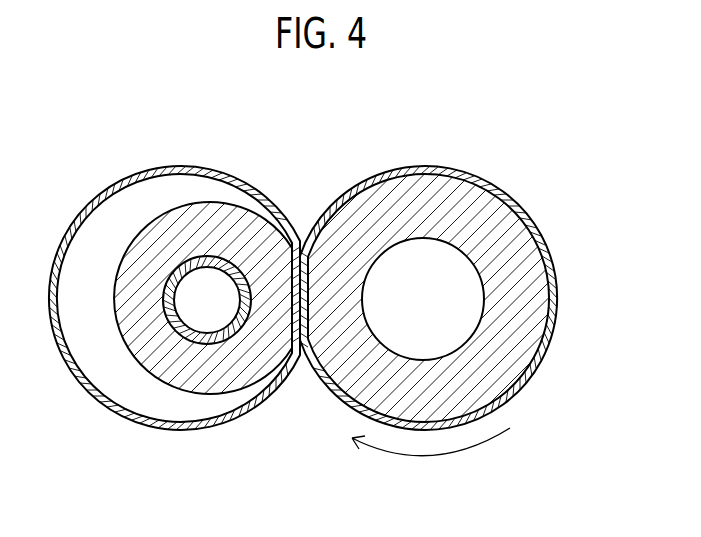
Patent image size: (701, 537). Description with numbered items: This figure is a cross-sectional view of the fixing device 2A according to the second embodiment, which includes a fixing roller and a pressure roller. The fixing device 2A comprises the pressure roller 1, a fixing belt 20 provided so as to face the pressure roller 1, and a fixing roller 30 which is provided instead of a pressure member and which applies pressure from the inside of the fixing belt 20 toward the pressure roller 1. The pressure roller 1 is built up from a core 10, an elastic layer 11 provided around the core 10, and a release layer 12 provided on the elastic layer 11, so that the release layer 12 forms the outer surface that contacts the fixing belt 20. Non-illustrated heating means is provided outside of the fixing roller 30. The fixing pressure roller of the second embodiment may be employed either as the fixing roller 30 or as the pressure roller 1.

The fixing device 2A is at (582, 118).
The pressure roller 1 is at (559, 401).
The core 10 is at (468, 303).
The elastic layer 11 is at (510, 272).
The release layer 12 is at (517, 212).
The fixing belt 20 is at (120, 417).
The fixing roller 30 is at (225, 228).